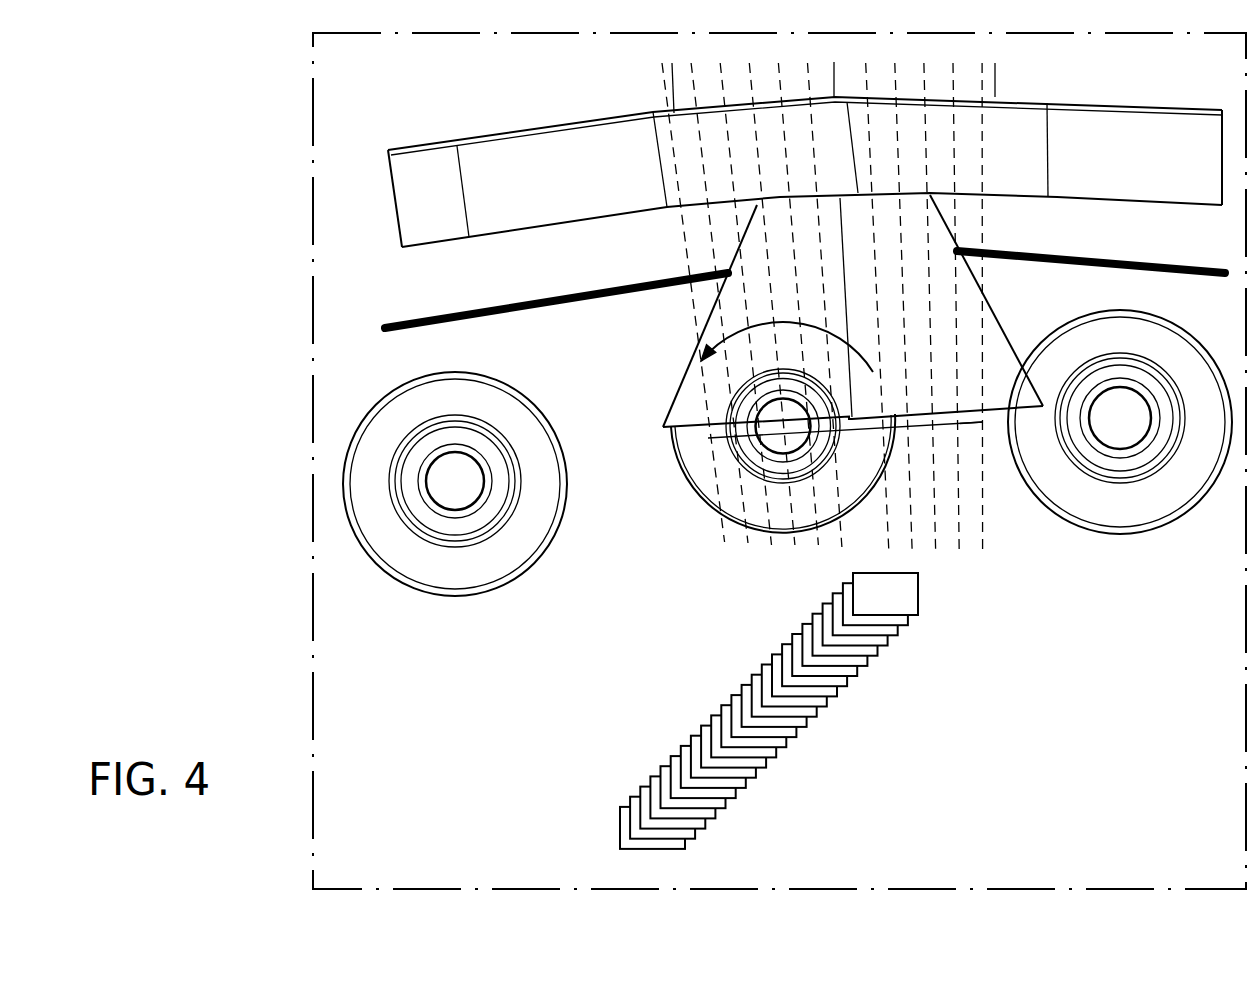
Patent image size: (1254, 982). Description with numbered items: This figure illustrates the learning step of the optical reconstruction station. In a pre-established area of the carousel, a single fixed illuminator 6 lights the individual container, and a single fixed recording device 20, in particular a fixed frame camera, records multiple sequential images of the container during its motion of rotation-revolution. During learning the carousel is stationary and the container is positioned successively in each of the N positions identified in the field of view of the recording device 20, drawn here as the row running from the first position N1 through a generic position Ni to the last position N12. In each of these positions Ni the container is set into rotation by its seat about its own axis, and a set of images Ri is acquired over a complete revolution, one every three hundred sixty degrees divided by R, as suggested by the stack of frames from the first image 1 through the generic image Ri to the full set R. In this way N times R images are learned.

The illuminator 6 is at (515, 233).
The recording device 20 is at (996, 306).
The first nozzle N1 is at (707, 439).
The positions of the optical reconstruction station Ni is at (776, 448).
The twelfth nozzle N12 is at (984, 428).
The first region 1 is at (885, 594).
The number of images per revolution R is at (693, 772).
The images acquired over a complete revolution Ri is at (825, 678).